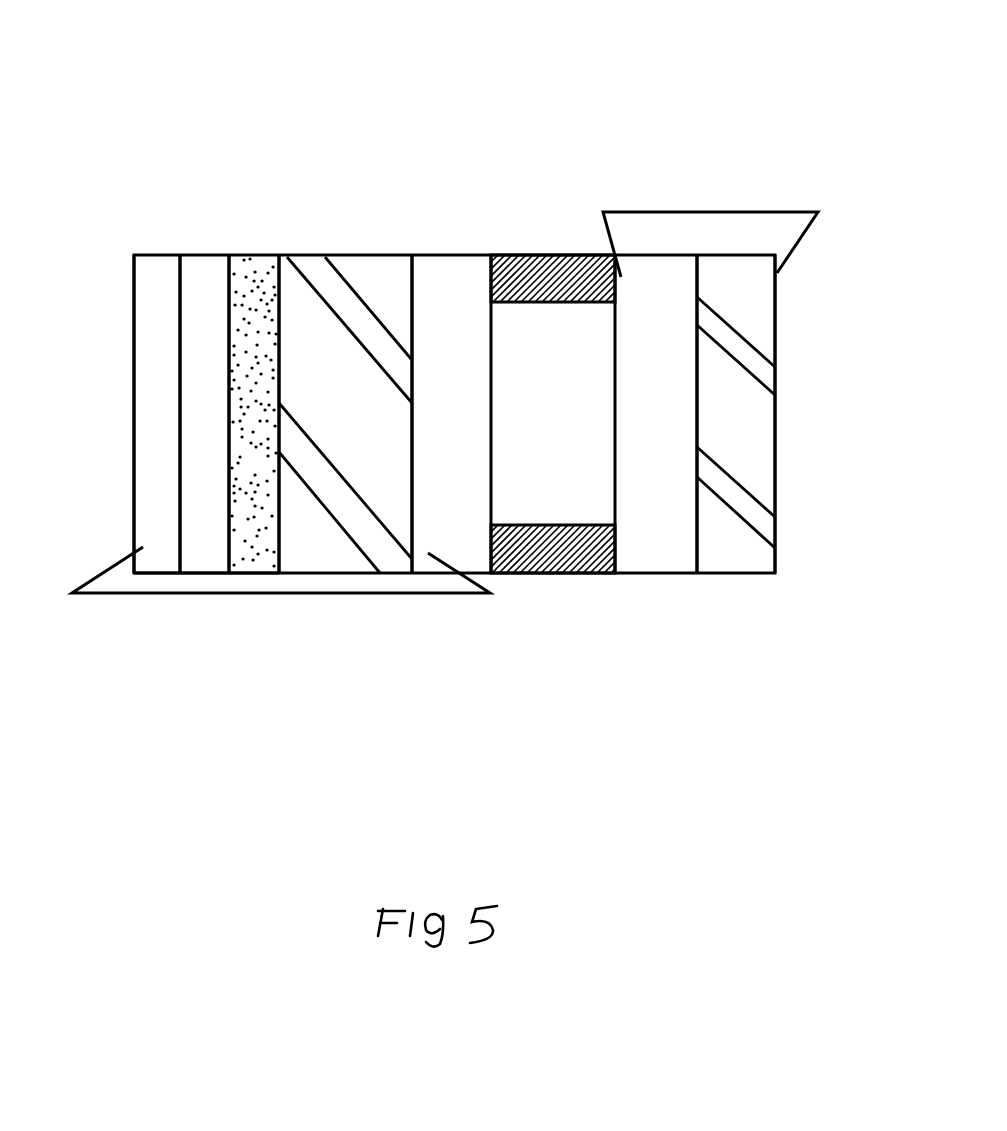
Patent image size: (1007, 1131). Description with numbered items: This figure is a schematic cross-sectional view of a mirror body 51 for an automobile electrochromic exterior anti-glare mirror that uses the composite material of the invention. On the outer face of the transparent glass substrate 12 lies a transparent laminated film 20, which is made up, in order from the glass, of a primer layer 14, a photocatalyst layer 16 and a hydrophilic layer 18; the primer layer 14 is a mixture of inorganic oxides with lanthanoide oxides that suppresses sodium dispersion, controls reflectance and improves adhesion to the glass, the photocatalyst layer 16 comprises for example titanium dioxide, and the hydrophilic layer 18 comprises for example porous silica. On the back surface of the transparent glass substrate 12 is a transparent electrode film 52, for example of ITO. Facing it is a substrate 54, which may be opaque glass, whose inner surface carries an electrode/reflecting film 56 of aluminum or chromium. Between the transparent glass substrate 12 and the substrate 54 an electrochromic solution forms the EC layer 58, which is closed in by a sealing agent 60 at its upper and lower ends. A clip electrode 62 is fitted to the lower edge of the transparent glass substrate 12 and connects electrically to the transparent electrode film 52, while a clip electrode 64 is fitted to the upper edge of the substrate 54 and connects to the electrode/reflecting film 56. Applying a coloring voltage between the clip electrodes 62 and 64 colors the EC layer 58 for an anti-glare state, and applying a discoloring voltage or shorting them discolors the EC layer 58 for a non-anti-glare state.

The mirror body 51 is at (571, 103).
The transparent glass substrate 12 is at (358, 278).
The primer layer 14 is at (252, 275).
The photocatalyst layer 16 is at (203, 276).
The hydrophilic layer 18 is at (160, 278).
The transparent laminated film 20 is at (280, 618).
The transparent electrode film 52 is at (441, 278).
The substrate 54 is at (735, 547).
The electrode/reflecting film 56 is at (653, 543).
The EC layer 58 is at (550, 488).
The sealing agent 60 is at (550, 278).
The clip electrode 62 is at (397, 595).
The clip electrode 64 is at (700, 210).